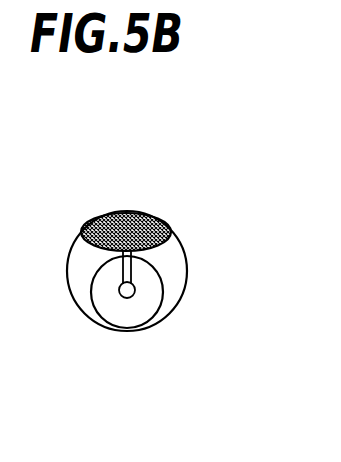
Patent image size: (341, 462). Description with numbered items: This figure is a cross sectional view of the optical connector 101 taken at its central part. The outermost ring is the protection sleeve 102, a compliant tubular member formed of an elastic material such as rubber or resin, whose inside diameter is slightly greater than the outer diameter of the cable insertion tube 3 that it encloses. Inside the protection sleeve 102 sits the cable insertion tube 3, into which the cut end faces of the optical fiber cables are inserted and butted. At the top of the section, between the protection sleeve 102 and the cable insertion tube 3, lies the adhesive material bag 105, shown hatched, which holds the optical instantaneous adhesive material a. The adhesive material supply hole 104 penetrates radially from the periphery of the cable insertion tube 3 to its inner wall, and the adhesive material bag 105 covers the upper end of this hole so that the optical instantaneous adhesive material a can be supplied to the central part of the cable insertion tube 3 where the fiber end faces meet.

The optical connector 101 is at (72, 152).
The protection sleeve 102 is at (106, 212).
The adhesive material supply hole 104 is at (118, 261).
The adhesive material bag 105 is at (133, 206).
The optical instantaneous adhesive material a is at (152, 216).
The cable insertion tube 3 is at (100, 322).